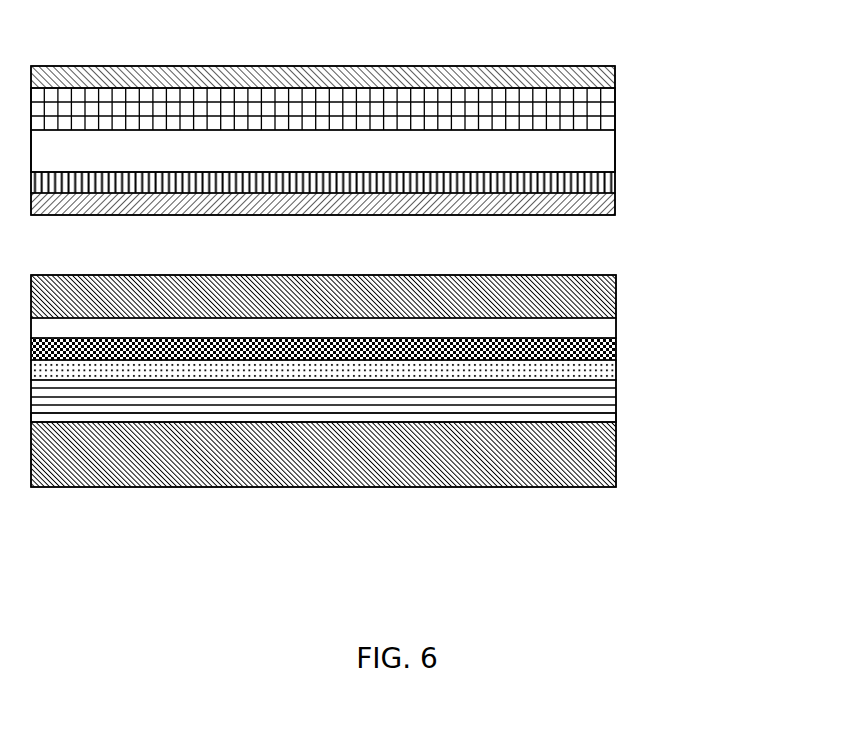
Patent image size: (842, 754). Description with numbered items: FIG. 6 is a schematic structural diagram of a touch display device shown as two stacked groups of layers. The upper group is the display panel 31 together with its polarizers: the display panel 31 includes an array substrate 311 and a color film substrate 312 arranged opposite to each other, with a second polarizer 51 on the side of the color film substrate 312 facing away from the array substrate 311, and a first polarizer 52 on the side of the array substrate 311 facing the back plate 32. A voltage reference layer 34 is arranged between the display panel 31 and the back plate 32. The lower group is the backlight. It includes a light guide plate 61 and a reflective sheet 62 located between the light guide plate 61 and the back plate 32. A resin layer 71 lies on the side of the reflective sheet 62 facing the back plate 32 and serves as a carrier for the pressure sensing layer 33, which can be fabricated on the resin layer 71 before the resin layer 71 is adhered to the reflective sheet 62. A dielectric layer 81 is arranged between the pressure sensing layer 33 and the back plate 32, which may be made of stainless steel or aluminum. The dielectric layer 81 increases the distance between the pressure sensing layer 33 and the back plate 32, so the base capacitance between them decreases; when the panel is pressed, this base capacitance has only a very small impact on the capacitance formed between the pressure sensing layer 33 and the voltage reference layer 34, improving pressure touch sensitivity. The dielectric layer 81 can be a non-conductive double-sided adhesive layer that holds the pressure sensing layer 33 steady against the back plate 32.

The second polarizer 51 is at (262, 70).
The voltage reference layer 34 is at (433, 172).
The color film substrate 312 is at (615, 110).
The array substrate 311 is at (615, 150).
The display panel 31 is at (698, 142).
The first polarizer 52 is at (555, 212).
The light guide plate 61 is at (73, 317).
The reflective sheet 62 is at (135, 335).
The dielectric layer 81 is at (272, 418).
The pressure sensing layer 33 is at (357, 380).
The resin layer 71 is at (457, 357).
The back plate 32 is at (573, 480).